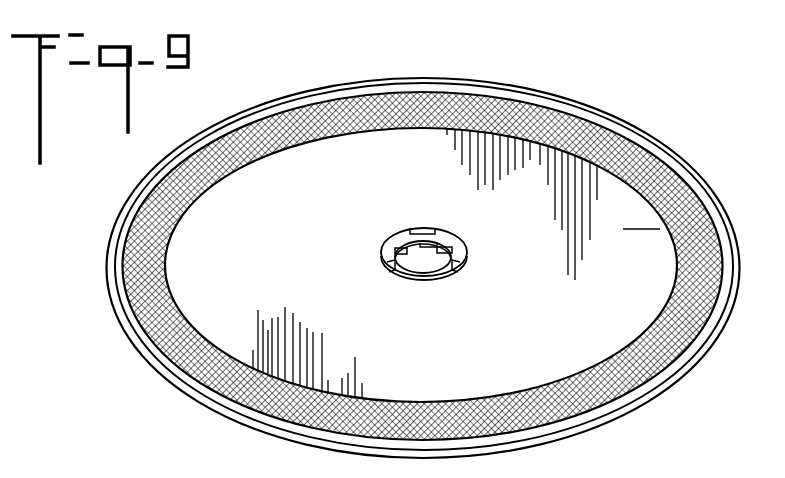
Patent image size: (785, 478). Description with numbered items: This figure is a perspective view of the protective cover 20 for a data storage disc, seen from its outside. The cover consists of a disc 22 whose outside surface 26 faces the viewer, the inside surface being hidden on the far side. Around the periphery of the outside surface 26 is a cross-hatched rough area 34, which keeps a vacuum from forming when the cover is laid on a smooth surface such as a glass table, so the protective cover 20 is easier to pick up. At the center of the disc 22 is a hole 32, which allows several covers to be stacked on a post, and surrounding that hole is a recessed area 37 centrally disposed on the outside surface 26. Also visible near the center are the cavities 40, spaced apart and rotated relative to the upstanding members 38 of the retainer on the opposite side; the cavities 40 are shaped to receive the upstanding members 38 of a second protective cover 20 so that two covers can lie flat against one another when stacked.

The protective cover 20 is at (698, 91).
The disc 22 is at (673, 227).
The outside surface 26 is at (400, 189).
The hole 32 is at (410, 267).
The rough area 34 is at (673, 347).
The recessed area 37 is at (433, 277).
The upstanding members 38 is at (397, 250).
The cavities 40 is at (462, 265).